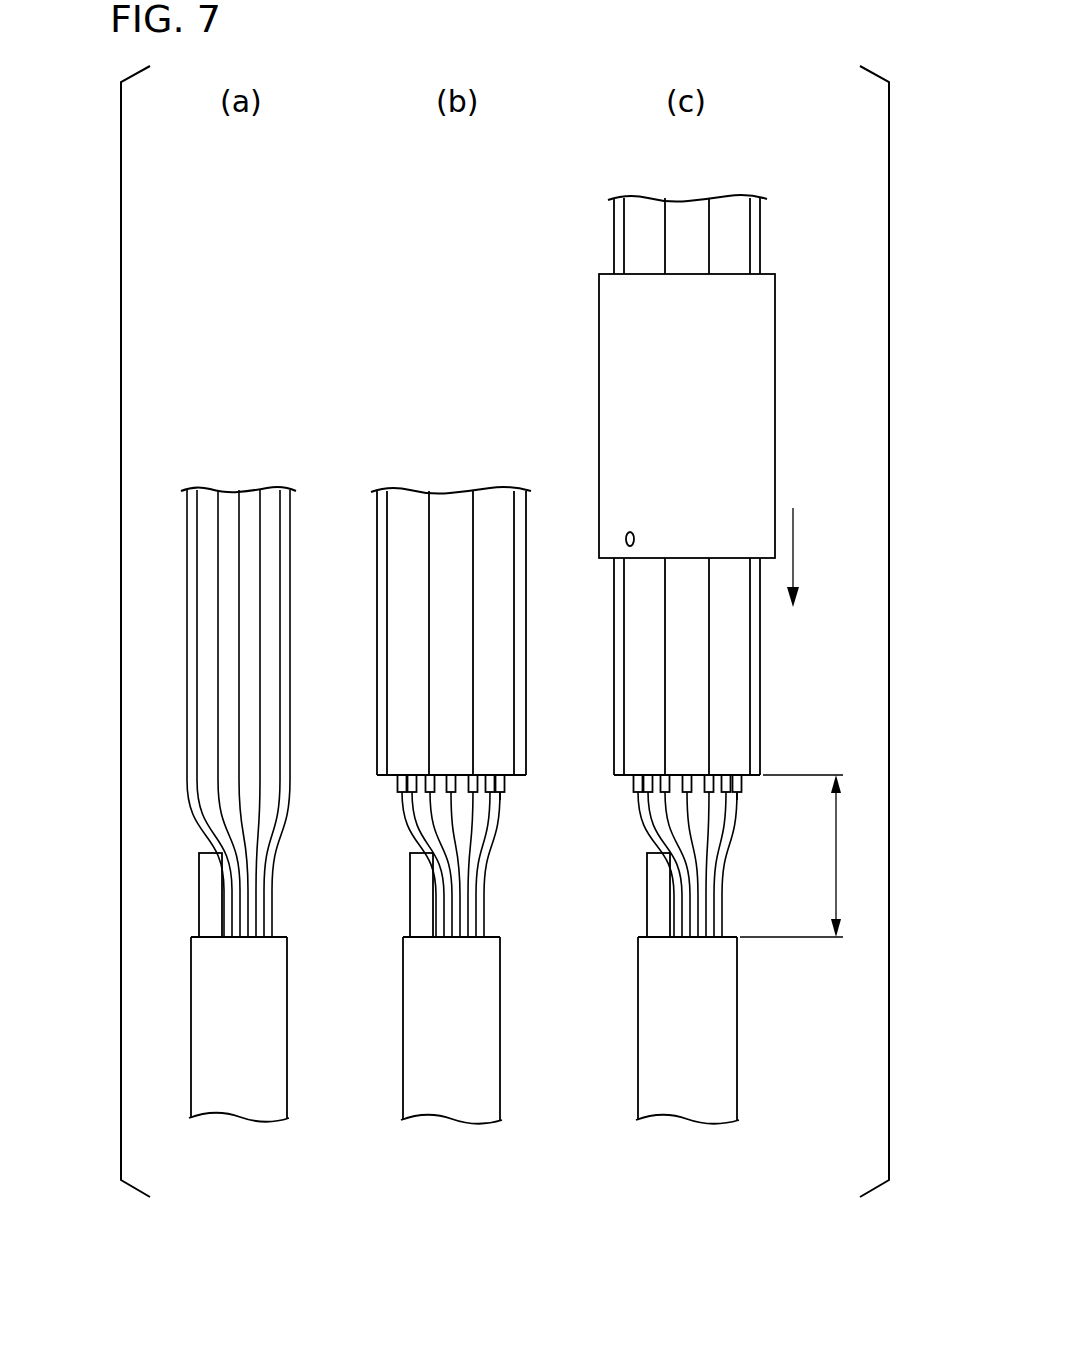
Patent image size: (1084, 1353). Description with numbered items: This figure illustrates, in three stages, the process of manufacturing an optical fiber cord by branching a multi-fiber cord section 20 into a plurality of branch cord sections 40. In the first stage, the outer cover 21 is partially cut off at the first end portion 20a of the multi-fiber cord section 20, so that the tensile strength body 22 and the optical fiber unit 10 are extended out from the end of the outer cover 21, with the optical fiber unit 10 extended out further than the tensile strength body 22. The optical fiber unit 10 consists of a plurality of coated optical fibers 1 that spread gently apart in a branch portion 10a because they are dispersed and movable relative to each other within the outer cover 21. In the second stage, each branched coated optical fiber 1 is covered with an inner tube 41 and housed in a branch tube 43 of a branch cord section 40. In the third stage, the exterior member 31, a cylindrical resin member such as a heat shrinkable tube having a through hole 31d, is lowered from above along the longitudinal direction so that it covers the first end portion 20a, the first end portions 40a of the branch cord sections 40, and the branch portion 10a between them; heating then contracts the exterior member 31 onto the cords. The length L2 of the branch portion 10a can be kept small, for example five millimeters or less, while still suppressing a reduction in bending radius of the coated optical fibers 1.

The coated optical fiber 1 is at (496, 731).
The optical fiber unit 10 is at (290, 912).
The branch portion 10a is at (500, 875).
The multi-fiber cord section 20 is at (486, 1010).
The first end portion 20a is at (208, 948).
The outer cover 21 is at (266, 1057).
The tensile strength body 22 is at (209, 904).
The exterior member 31 is at (695, 376).
The through hole 31d is at (626, 539).
The branch cord section 40 is at (606, 665).
The first end portion 40a is at (755, 770).
The inner tube 41 is at (508, 790).
The branch tube 43 is at (506, 780).
The length of the branch portion L2 is at (805, 856).